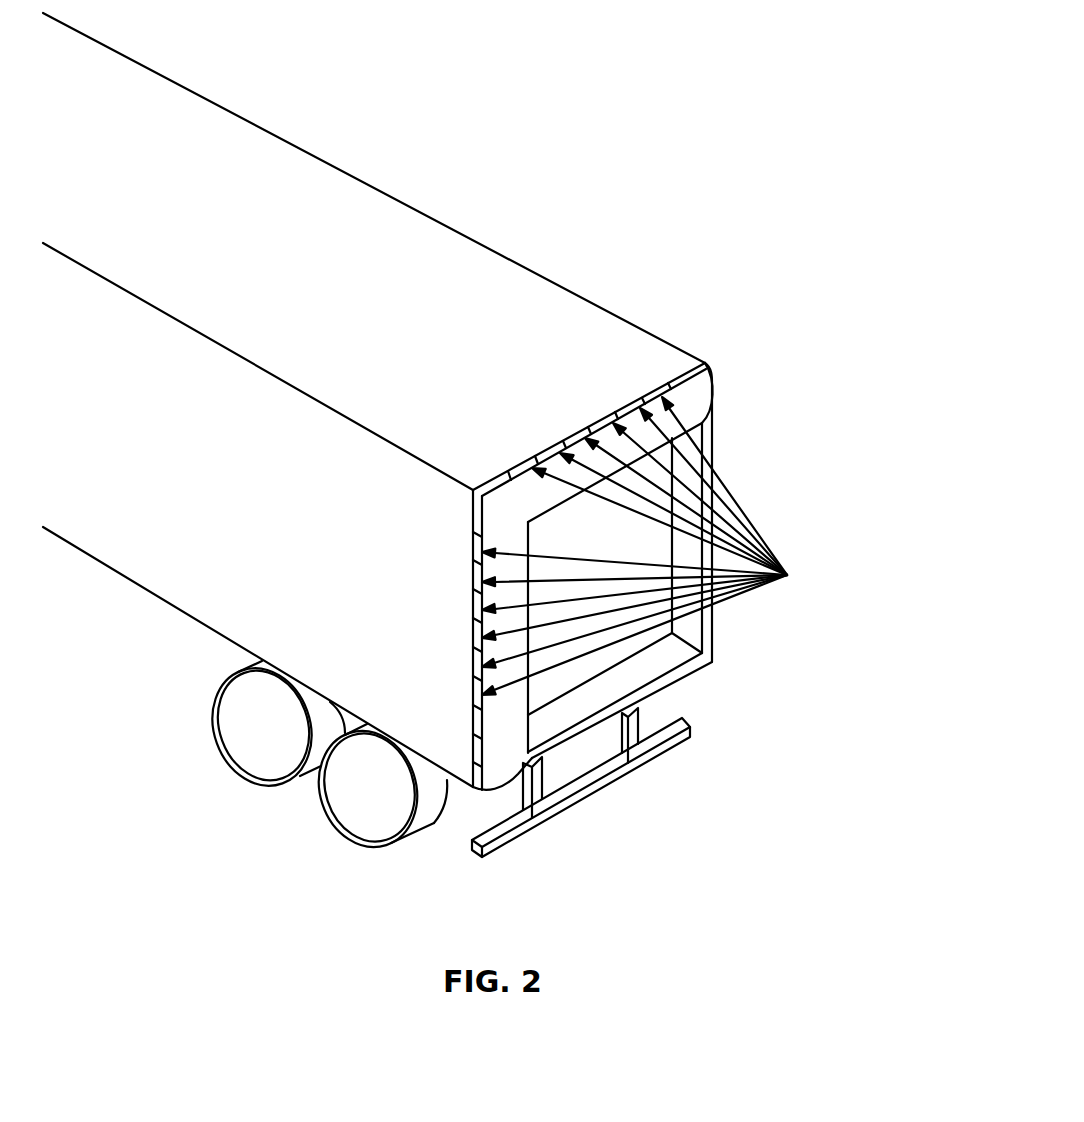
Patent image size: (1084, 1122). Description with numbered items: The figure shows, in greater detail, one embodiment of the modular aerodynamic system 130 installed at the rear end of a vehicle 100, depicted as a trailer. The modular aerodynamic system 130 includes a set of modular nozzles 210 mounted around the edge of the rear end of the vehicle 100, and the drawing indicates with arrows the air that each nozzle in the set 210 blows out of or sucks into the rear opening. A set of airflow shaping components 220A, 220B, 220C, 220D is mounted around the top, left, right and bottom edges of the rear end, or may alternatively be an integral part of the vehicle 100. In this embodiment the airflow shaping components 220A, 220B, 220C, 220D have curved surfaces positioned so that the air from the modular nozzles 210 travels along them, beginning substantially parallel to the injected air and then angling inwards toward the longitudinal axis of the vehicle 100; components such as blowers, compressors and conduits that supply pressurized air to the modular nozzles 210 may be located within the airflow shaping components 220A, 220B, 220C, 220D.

The vehicle 100 is at (577, 290).
The modular aerodynamic system 130 is at (712, 372).
The modular nozzles 210 is at (725, 546).
The airflow shaping component 220A is at (518, 492).
The airflow shaping component 220B is at (473, 765).
The airflow shaping component 220C is at (707, 437).
The airflow shaping component 220D is at (685, 672).